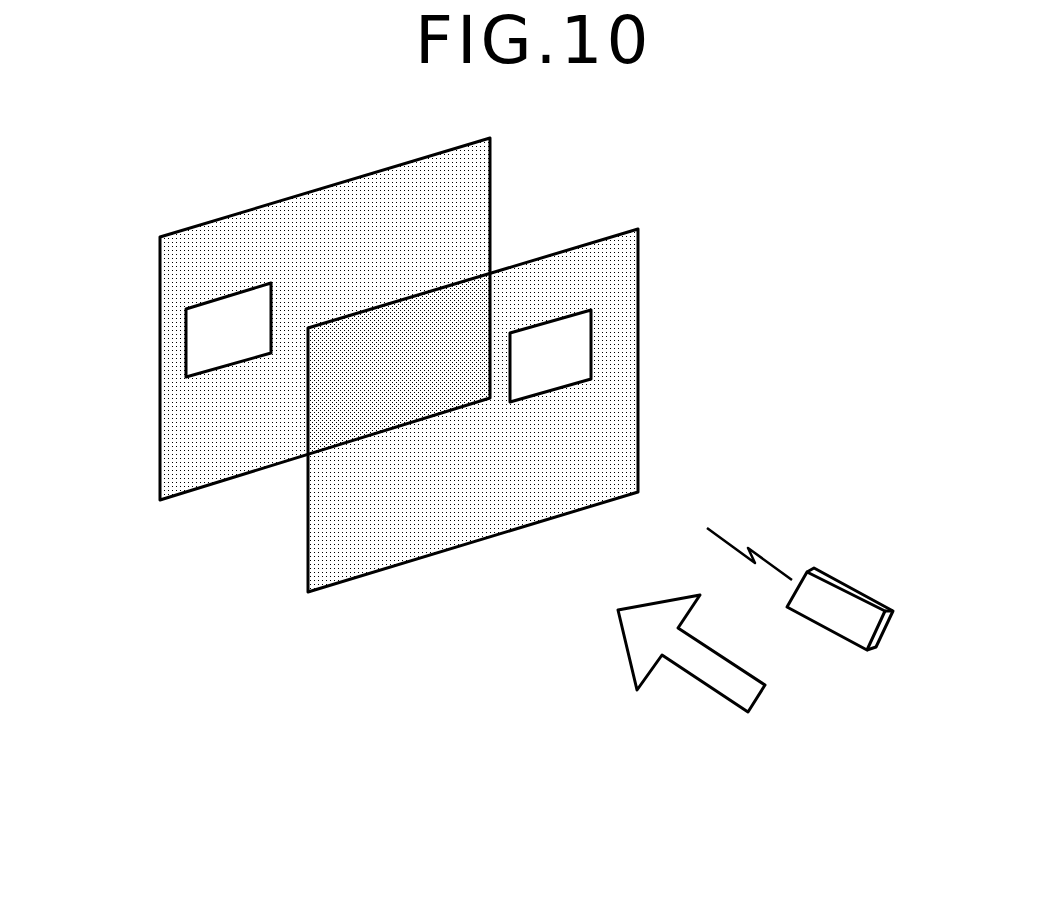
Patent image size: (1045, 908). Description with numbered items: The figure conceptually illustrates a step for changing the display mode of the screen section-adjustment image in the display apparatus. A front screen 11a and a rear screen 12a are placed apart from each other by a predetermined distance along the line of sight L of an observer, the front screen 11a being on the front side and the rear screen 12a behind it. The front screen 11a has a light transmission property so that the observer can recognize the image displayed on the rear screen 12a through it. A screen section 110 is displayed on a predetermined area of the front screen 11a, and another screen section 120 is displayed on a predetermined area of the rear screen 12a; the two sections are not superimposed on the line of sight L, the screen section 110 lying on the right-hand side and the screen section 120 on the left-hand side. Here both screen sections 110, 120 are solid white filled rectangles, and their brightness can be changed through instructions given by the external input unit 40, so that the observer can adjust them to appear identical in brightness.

The rear screen 12a is at (216, 235).
The front screen 11a is at (553, 275).
The screen section 120 is at (222, 330).
The screen section 110 is at (578, 355).
The external input unit 40 is at (867, 587).
The line of sight L is at (693, 678).